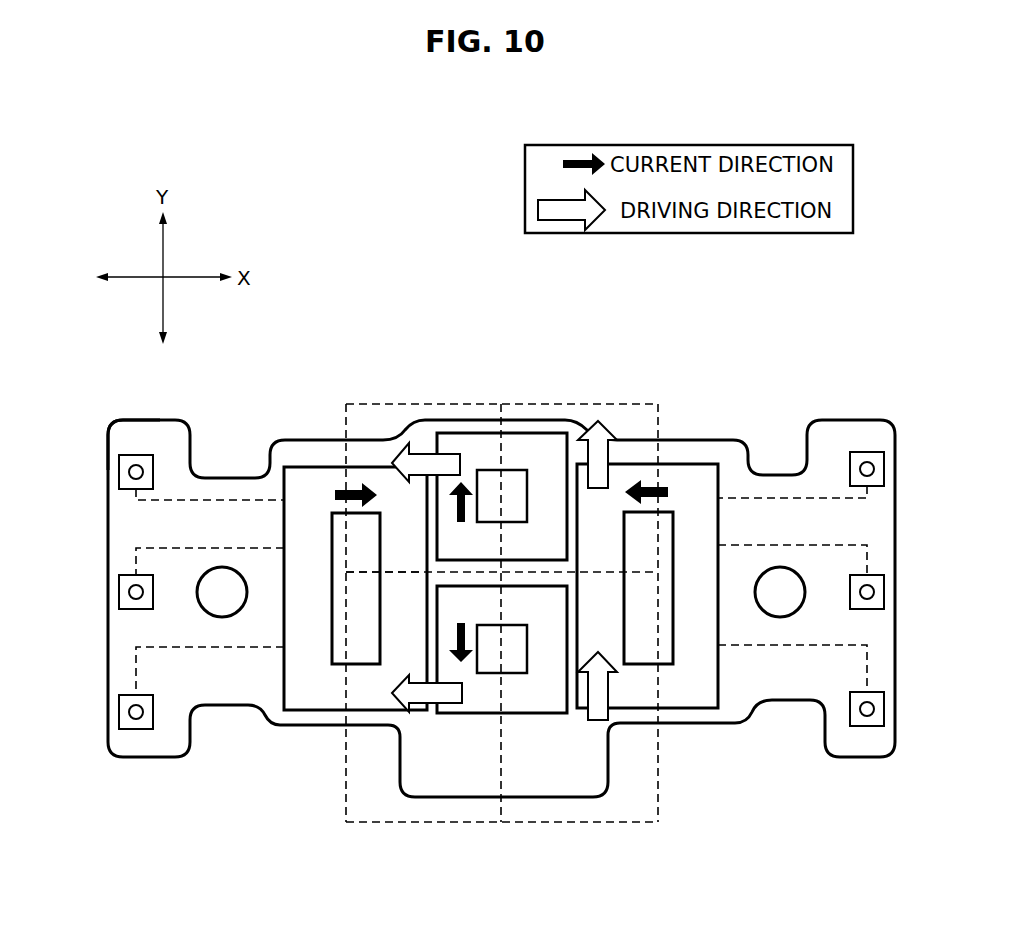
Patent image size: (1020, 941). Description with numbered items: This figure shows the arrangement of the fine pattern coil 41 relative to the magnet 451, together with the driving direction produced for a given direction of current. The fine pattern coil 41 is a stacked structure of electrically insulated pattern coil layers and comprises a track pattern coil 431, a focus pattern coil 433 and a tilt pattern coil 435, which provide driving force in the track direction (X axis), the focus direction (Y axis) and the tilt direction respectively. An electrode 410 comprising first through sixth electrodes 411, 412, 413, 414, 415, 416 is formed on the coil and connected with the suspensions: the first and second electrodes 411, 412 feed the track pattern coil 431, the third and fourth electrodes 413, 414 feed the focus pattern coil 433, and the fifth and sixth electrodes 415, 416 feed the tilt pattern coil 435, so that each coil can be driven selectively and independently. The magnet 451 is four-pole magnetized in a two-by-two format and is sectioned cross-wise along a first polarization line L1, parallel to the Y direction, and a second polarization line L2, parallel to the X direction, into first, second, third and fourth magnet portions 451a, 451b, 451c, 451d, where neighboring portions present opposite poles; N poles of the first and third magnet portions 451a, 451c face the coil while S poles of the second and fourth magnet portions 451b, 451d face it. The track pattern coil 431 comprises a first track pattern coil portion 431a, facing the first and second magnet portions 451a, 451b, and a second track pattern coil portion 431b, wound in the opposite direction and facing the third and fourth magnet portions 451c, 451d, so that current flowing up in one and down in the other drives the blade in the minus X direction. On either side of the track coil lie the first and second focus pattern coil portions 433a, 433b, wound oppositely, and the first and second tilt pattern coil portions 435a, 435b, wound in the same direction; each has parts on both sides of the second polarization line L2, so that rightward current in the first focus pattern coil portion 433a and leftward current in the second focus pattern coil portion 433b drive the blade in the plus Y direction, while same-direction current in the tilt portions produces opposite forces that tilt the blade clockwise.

The fine pattern coil 41 is at (814, 360).
The electrode 410 is at (114, 449).
The first electrode 411 is at (119, 473).
The second electrode 412 is at (884, 469).
The third electrode 413 is at (119, 592).
The fourth electrode 414 is at (884, 592).
The fifth electrode 415 is at (119, 713).
The sixth electrode 416 is at (884, 709).
The track pattern coil 431 is at (559, 599).
The first track pattern coil portion 431a is at (588, 420).
The second track pattern coil portion 431b is at (532, 714).
The focus pattern coil 433 is at (470, 540).
The tilt pattern coil 435 is at (302, 447).
The first focus pattern coil portion 433a is at (265, 661).
The first tilt pattern coil portion 435a is at (365, 575).
The second focus pattern coil portion 433b is at (721, 650).
The second tilt pattern coil portion 435b is at (712, 712).
The magnet 451 is at (550, 597).
The first magnet portion 451a is at (658, 432).
The second magnet portion 451b is at (440, 404).
The third magnet portion 451c is at (400, 823).
The fourth magnet portion 451d is at (630, 823).
The first polarization line L1 is at (512, 420).
The second polarization line L2 is at (342, 580).